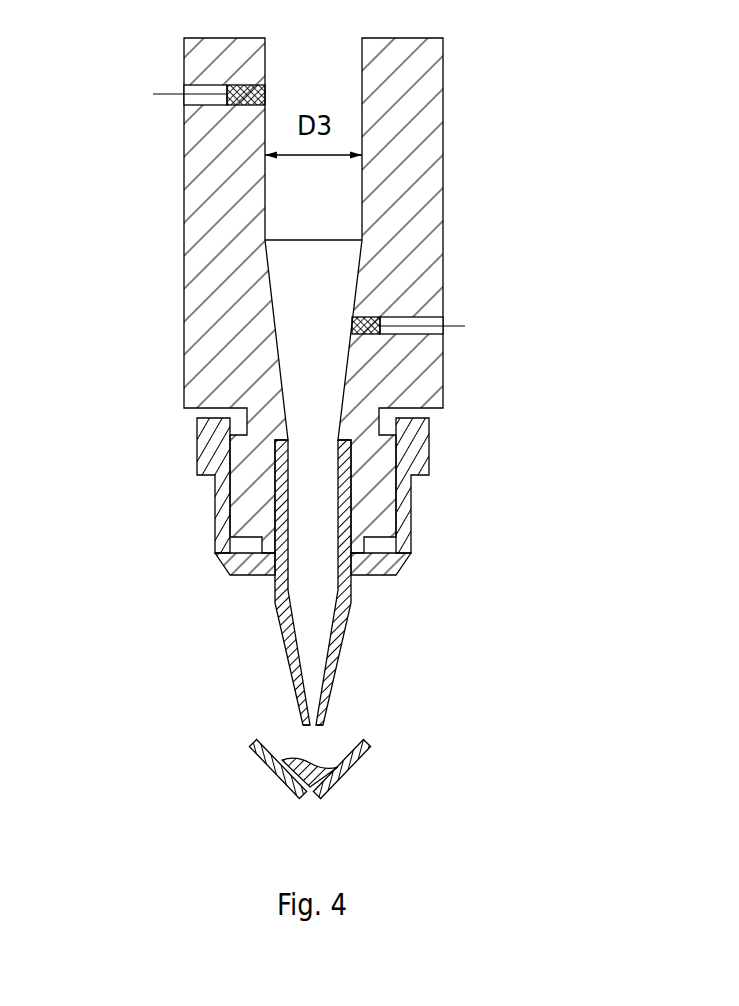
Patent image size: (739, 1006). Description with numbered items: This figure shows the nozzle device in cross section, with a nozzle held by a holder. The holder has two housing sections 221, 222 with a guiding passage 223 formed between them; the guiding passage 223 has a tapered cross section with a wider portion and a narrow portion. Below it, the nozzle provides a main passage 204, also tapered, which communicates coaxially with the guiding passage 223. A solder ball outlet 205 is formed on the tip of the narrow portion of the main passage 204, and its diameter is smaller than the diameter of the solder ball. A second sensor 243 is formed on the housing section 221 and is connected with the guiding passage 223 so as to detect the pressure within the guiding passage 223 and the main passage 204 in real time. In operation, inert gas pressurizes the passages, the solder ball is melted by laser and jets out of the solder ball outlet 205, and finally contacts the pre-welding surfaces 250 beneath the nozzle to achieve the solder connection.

The housing section 221 is at (408, 137).
The housing section 222 is at (227, 170).
The guiding passage 223 is at (308, 270).
The second sensor 243 is at (233, 90).
The main passage 204 is at (308, 598).
The solder ball outlet 205 is at (310, 722).
The pre-welding surfaces 250 is at (285, 773).